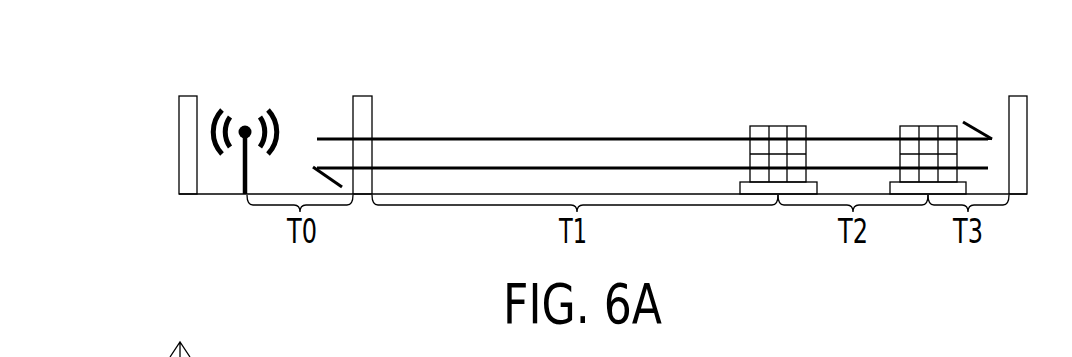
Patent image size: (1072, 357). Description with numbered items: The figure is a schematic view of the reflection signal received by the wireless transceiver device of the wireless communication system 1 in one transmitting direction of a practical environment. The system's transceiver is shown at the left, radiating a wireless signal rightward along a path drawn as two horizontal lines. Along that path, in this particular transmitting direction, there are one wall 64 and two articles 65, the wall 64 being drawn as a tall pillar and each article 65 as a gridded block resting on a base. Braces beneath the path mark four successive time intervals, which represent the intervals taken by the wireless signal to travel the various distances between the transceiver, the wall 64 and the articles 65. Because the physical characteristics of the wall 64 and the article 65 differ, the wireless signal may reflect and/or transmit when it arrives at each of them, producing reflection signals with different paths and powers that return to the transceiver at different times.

The wireless communication system 1 is at (243, 98).
The wall 64 is at (363, 94).
The article 65 is at (793, 126).